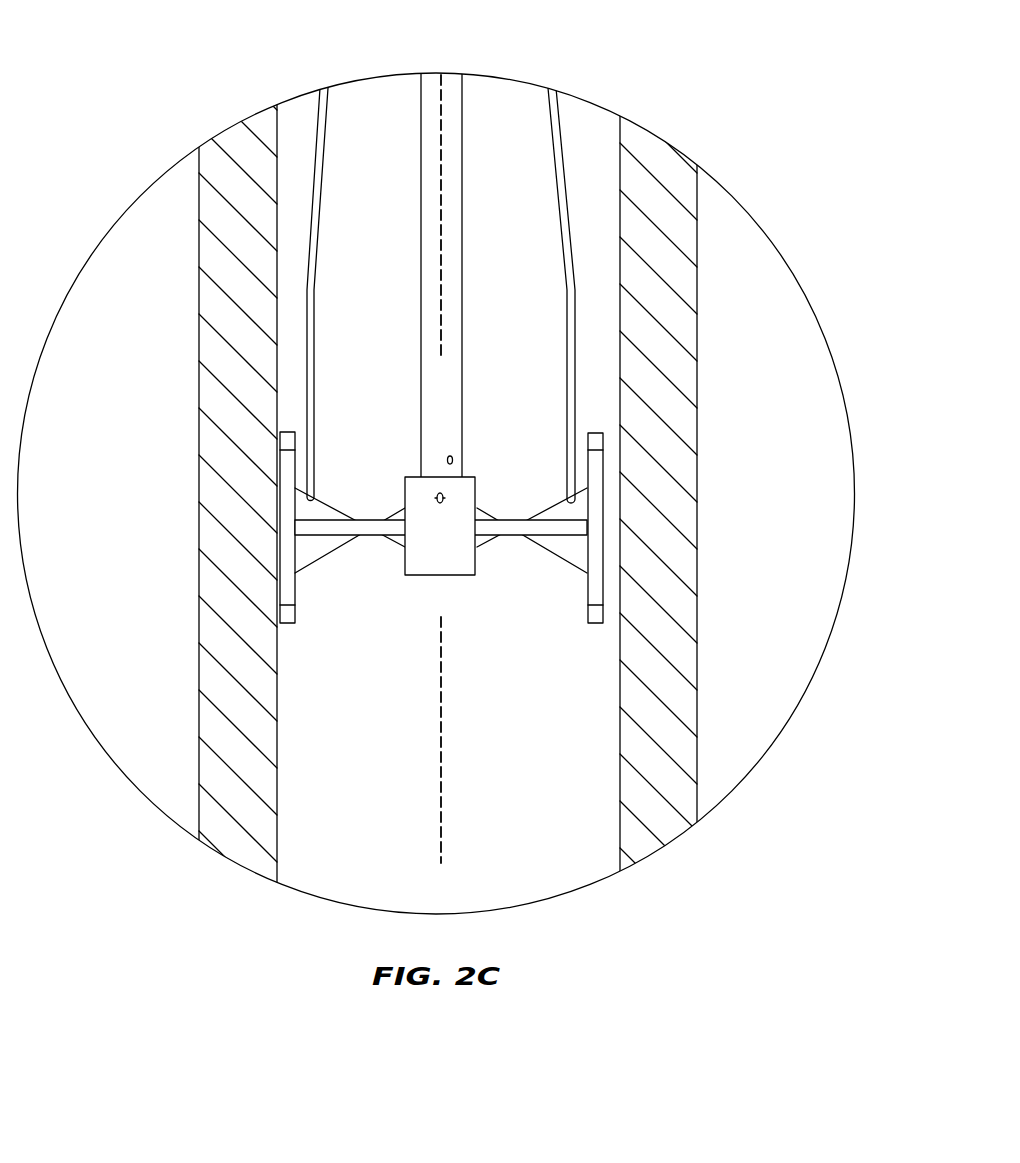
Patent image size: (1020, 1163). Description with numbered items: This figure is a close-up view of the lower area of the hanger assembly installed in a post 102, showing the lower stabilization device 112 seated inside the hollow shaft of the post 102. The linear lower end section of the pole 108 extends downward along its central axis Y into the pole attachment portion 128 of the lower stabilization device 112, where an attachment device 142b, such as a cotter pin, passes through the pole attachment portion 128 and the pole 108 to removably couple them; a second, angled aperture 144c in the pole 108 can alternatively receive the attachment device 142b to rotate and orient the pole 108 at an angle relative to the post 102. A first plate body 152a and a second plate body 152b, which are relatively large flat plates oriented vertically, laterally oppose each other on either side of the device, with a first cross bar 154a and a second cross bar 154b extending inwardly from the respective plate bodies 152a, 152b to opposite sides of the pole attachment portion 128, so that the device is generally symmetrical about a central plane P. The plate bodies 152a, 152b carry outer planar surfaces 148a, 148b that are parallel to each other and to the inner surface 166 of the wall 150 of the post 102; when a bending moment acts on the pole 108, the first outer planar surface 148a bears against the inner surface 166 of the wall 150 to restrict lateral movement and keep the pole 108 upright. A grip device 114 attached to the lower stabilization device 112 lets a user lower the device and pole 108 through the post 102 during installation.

The post 102 is at (227, 470).
The pole 108 is at (462, 93).
The lower stabilization device 112 is at (336, 646).
The grip device 114 is at (308, 270).
The pole attachment portion 128 is at (468, 487).
The attachment device 142b is at (435, 498).
The aperture 144c is at (452, 455).
The first outer planar surface 148a is at (279, 508).
The second outer planar surface 148b is at (603, 467).
The wall 150 is at (735, 695).
The first plate body 152a is at (283, 572).
The second plate body 152b is at (593, 493).
The first cross bar 154a is at (372, 528).
The second cross bar 154b is at (538, 535).
The inner surface 166 is at (278, 737).
The central axis Y is at (445, 186).
The central plane P is at (442, 783).